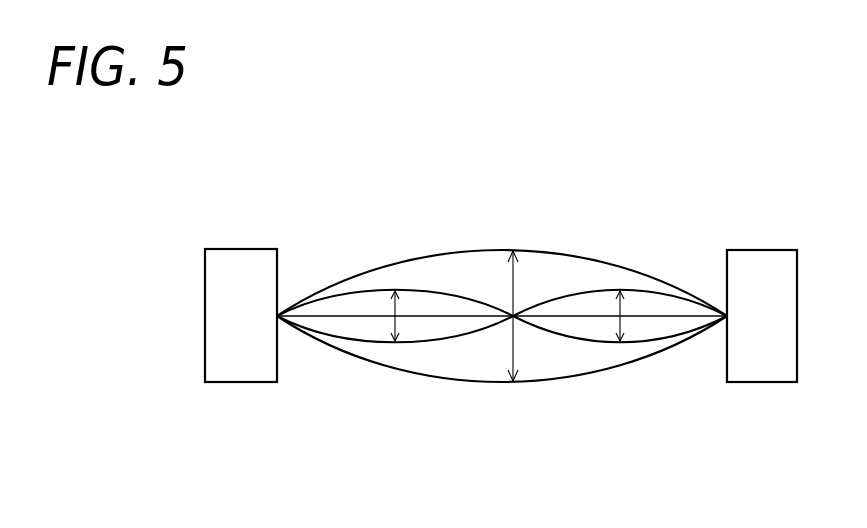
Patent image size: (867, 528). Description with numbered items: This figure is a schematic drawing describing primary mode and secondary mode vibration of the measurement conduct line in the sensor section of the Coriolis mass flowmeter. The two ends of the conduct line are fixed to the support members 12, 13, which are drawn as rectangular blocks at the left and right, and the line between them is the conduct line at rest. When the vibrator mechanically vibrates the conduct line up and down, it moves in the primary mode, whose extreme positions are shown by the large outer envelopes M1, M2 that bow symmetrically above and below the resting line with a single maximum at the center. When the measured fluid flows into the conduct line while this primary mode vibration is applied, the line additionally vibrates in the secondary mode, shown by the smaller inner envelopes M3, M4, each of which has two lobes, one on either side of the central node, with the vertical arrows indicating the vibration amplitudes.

The support member 12 is at (238, 260).
The support member 13 is at (746, 260).
The primary mode vibration M1 is at (582, 258).
The primary mode vibration M2 is at (582, 373).
The secondary mode vibration M3 is at (433, 292).
The secondary mode vibration M4 is at (433, 338).